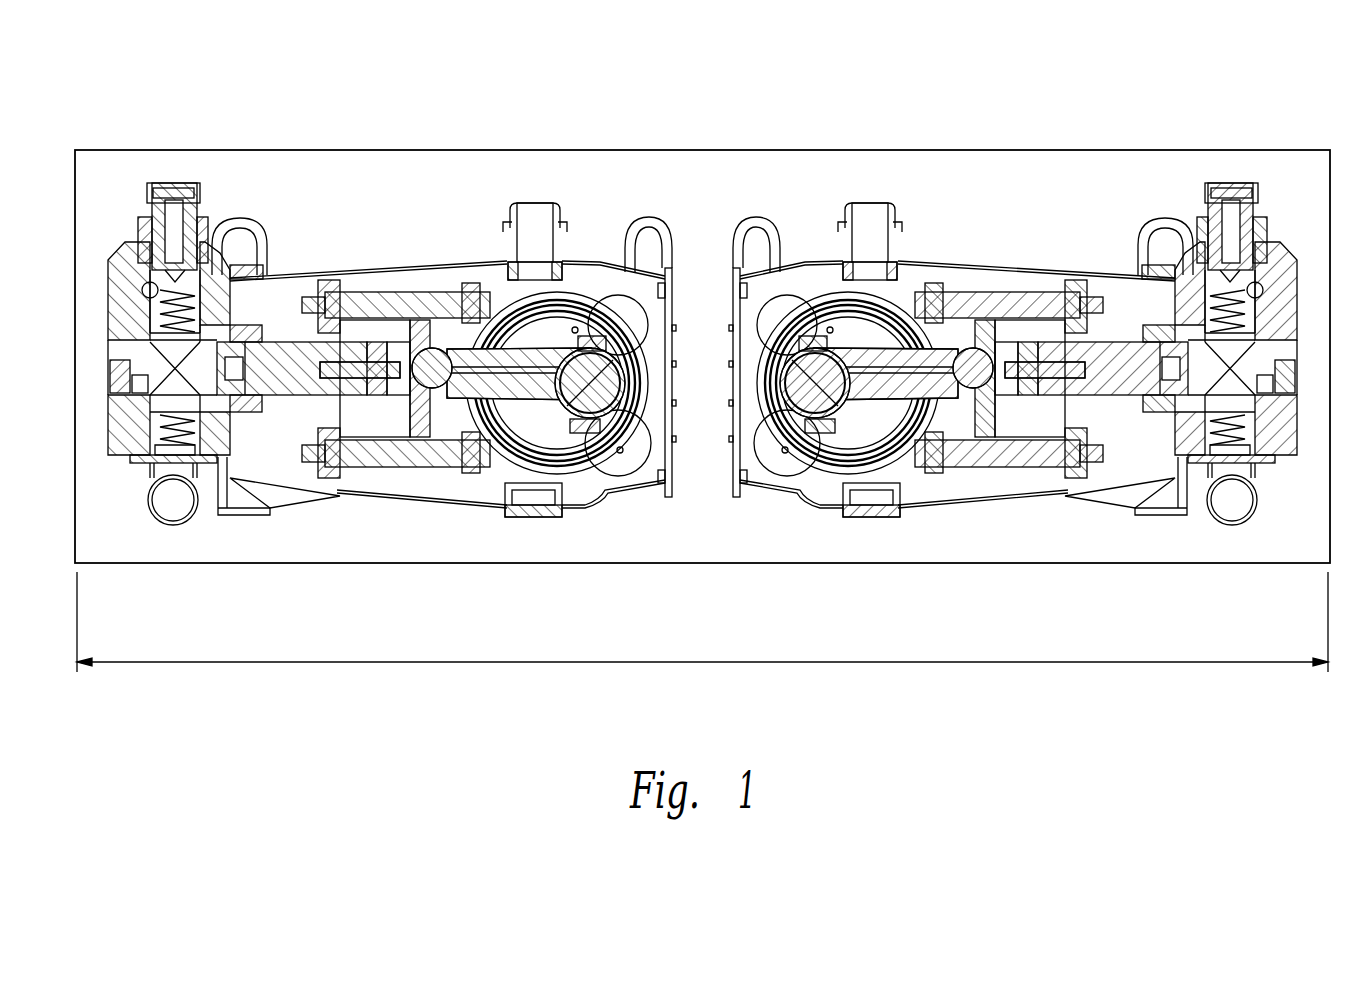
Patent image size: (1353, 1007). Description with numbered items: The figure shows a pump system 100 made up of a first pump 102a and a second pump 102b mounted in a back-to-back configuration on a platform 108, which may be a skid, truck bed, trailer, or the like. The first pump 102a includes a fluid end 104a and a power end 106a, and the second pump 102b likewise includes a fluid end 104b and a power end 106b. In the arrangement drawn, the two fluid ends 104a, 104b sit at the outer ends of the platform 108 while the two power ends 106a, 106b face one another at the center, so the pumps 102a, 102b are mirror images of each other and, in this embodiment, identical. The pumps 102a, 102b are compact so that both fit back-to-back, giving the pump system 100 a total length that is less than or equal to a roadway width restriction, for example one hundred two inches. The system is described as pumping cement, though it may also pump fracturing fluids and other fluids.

The pump system 100 is at (1132, 58).
The platform 108 is at (703, 150).
The first pump 102a is at (378, 200).
The second pump 102b is at (1027, 200).
The fluid end 104a is at (125, 240).
The fluid end 104b is at (1280, 240).
The power end 106a is at (580, 262).
The power end 106b is at (825, 262).